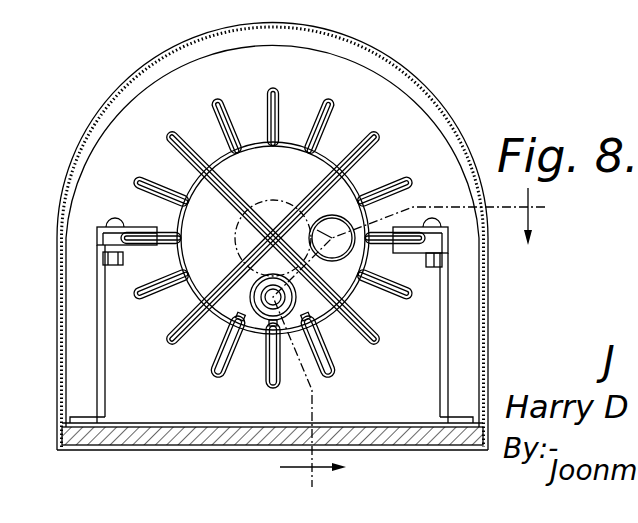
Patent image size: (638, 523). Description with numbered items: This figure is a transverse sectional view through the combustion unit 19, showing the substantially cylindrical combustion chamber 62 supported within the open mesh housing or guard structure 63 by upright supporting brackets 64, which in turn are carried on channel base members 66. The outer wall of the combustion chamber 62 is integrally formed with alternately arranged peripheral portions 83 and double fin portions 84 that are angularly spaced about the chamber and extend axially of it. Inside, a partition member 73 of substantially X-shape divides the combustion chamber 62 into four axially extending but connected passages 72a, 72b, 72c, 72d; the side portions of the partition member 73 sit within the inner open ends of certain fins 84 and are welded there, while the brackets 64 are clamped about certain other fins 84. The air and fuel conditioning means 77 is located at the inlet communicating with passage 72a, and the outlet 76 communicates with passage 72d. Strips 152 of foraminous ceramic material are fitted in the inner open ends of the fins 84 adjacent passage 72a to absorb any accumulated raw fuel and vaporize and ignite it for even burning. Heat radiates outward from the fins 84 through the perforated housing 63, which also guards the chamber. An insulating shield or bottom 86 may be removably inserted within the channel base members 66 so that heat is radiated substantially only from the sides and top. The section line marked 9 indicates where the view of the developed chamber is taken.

The combustion unit 19 is at (172, 66).
The open mesh housing or guard structure 63 is at (434, 106).
The upright supporting brackets 64 is at (100, 384).
The insulating shield or bottom 86 is at (392, 440).
The channel base members 66 is at (68, 455).
The peripheral portions 83 is at (356, 181).
The double fin portions 84 is at (212, 103).
The combustion chamber 62 is at (371, 132).
The partition member 73 is at (229, 194).
The strips 152 is at (265, 356).
The air and fuel conditioning means 77 is at (250, 298).
The outlet 76 is at (352, 252).
The combustion passage 72a is at (323, 312).
The combustion passage 72b is at (236, 253).
The combustion passage 72c is at (306, 189).
The combustion passage 72d is at (341, 290).
The section line 9- 9 is at (421, 349).